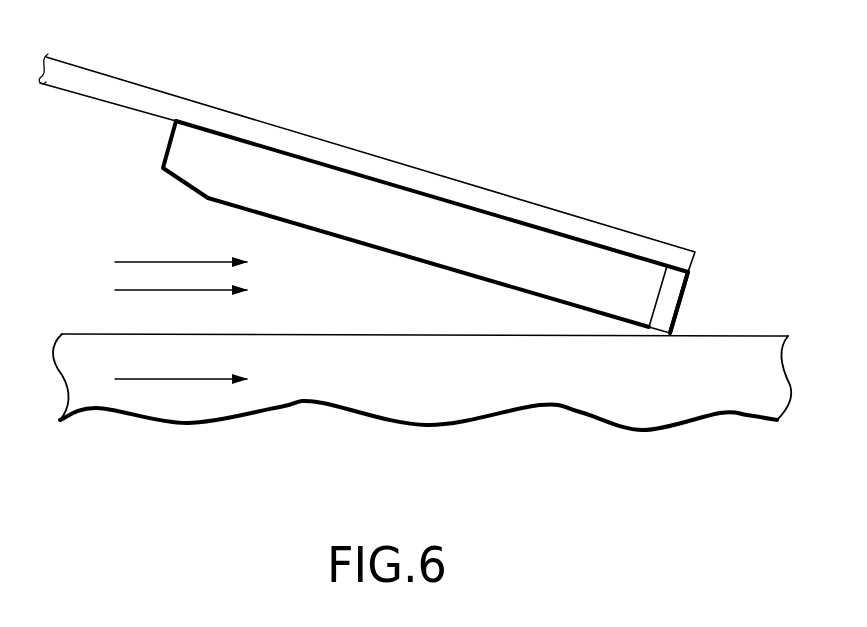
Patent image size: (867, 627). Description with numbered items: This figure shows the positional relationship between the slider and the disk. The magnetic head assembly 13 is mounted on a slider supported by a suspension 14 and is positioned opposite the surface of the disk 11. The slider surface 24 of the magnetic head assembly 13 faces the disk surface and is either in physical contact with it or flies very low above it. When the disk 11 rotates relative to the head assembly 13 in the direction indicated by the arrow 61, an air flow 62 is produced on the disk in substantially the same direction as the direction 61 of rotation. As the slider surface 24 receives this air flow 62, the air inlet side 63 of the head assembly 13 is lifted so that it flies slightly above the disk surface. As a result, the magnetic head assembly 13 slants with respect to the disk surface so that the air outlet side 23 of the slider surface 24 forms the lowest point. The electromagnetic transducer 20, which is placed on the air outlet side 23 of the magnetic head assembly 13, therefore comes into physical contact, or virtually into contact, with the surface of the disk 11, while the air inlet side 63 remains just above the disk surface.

The disk 11 is at (718, 402).
The magnetic head assembly 13 is at (517, 228).
The suspension 14 is at (150, 97).
The electromagnetic transducer 20 is at (658, 322).
The air outlet side 23 is at (692, 283).
The slider surface 24 is at (390, 255).
The direction of rotation 61 is at (203, 382).
The air flow 62 is at (112, 278).
The air inlet side 63 is at (176, 153).